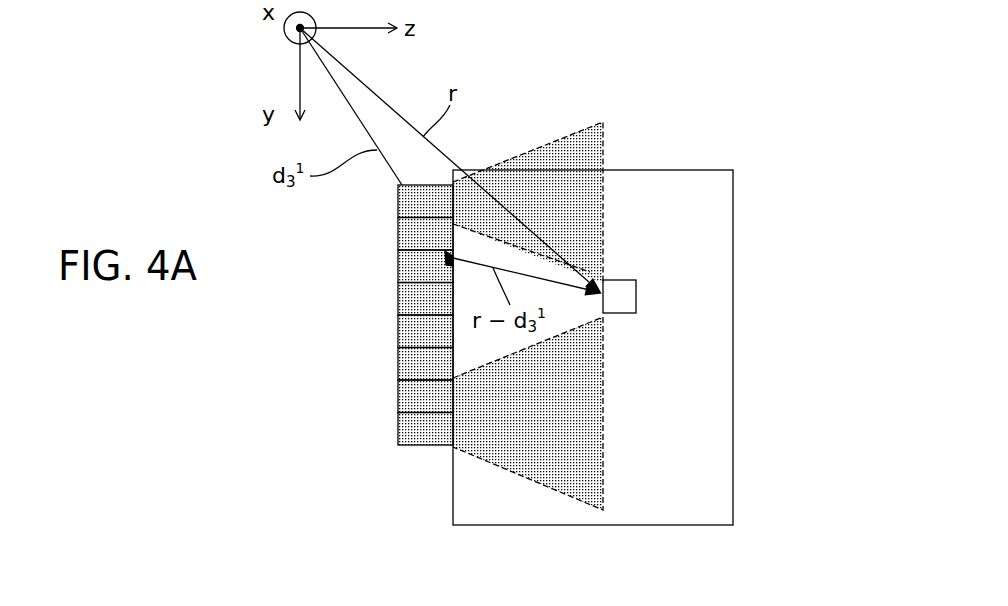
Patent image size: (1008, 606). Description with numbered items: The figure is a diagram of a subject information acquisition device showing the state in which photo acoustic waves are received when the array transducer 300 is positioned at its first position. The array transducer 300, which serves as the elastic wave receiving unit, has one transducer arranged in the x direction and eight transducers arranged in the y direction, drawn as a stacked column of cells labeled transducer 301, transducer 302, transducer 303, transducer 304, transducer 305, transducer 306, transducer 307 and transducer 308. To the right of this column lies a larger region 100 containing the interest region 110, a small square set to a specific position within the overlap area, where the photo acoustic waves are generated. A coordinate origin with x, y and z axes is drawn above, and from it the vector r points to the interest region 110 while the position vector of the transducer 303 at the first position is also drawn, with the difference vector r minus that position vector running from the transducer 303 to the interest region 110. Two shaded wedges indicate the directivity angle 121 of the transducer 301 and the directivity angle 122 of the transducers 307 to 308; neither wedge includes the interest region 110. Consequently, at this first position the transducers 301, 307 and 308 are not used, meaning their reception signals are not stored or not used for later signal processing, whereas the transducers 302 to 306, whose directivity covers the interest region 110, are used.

The display 100 is at (727, 470).
The interest region 110 is at (619, 280).
The directivity angle 121 is at (570, 165).
The directivity angle 122 is at (560, 483).
The array transducer 300 is at (386, 186).
The transducer 301 is at (425, 201).
The transducer 302 is at (425, 234).
The transducer 303 is at (425, 266).
The transducer 304 is at (425, 299).
The transducer 305 is at (425, 331).
The transducer 306 is at (425, 364).
The transducer 307 is at (425, 396).
The transducer 308 is at (425, 429).